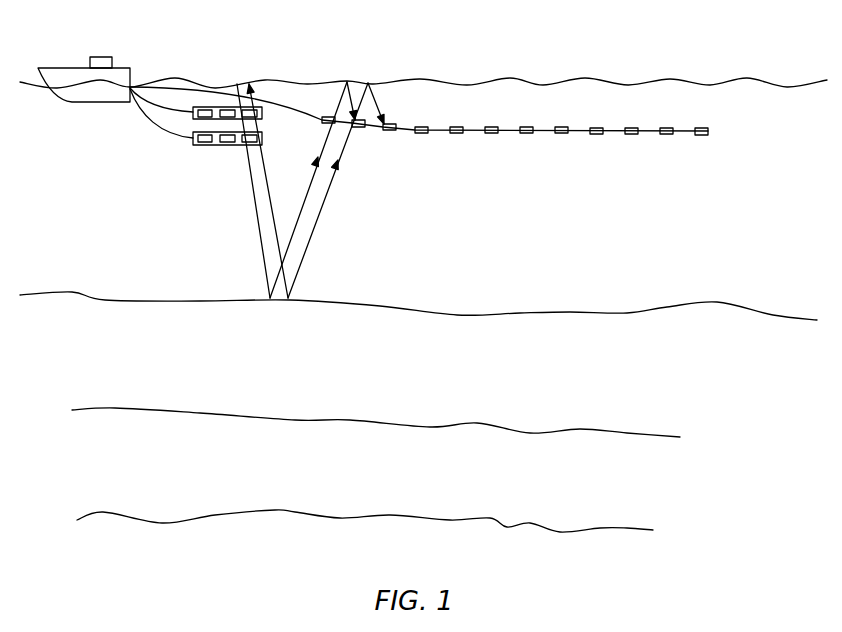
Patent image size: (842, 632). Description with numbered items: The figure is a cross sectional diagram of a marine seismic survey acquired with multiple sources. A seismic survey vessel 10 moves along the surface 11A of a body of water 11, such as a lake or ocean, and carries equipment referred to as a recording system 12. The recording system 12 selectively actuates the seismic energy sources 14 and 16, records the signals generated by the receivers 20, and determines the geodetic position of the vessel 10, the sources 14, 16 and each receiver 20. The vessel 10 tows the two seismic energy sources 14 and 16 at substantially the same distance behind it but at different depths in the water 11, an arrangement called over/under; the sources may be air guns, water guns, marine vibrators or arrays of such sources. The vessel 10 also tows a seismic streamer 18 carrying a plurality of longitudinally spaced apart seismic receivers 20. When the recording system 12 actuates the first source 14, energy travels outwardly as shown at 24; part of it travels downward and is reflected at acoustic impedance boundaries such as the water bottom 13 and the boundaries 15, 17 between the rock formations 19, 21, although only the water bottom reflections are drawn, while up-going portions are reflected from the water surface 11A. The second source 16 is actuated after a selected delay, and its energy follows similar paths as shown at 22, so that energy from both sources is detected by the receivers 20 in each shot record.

The seismic survey vessel 10 is at (123, 67).
The body of water 11 is at (82, 166).
The water surface 11A is at (752, 80).
The recording system 12 is at (100, 57).
The water bottom 13 is at (455, 316).
The seismic energy source 14 is at (193, 110).
The boundary 15 is at (433, 428).
The seismic energy source 16 is at (193, 144).
The boundary 17 is at (507, 528).
The seismic streamer 18 is at (303, 116).
The rock formation 19 is at (528, 385).
The seismic receivers 20 is at (332, 116).
The rock formation 21 is at (514, 486).
The energy path from second source 22 is at (339, 94).
The energy path from first source 24 is at (262, 88).